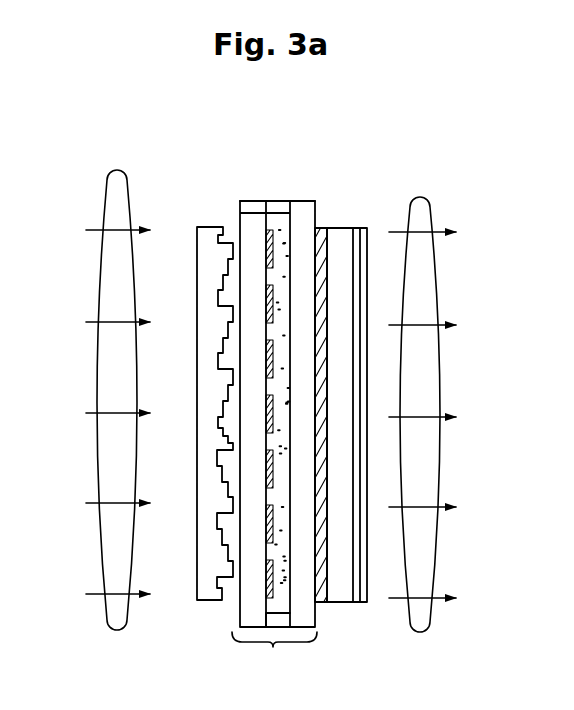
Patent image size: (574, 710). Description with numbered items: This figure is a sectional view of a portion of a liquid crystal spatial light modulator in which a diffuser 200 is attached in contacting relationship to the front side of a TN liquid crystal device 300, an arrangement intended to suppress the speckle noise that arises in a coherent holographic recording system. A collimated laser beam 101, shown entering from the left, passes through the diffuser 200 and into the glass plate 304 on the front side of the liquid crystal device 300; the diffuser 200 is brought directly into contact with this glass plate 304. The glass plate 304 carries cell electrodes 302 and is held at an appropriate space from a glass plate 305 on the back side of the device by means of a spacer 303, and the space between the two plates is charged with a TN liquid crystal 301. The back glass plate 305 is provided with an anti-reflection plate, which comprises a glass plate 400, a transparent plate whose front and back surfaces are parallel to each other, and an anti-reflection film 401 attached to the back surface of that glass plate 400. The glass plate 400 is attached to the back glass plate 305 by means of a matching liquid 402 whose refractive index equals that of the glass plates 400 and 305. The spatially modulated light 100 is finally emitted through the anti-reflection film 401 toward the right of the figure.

The spatially modulated light 100 is at (432, 202).
The collimated laser beam 101 is at (115, 172).
The diffuser 200 is at (203, 232).
The liquid crystal device 300 is at (262, 382).
The TN liquid crystal 301 is at (281, 223).
The cell electrodes 302 is at (268, 230).
The spacer 303 is at (276, 208).
The glass plate 304 is at (250, 255).
The glass plate 305 is at (305, 212).
The glass plate 400 is at (350, 228).
The anti-reflection film 401 is at (366, 229).
The matching liquid 402 is at (322, 230).